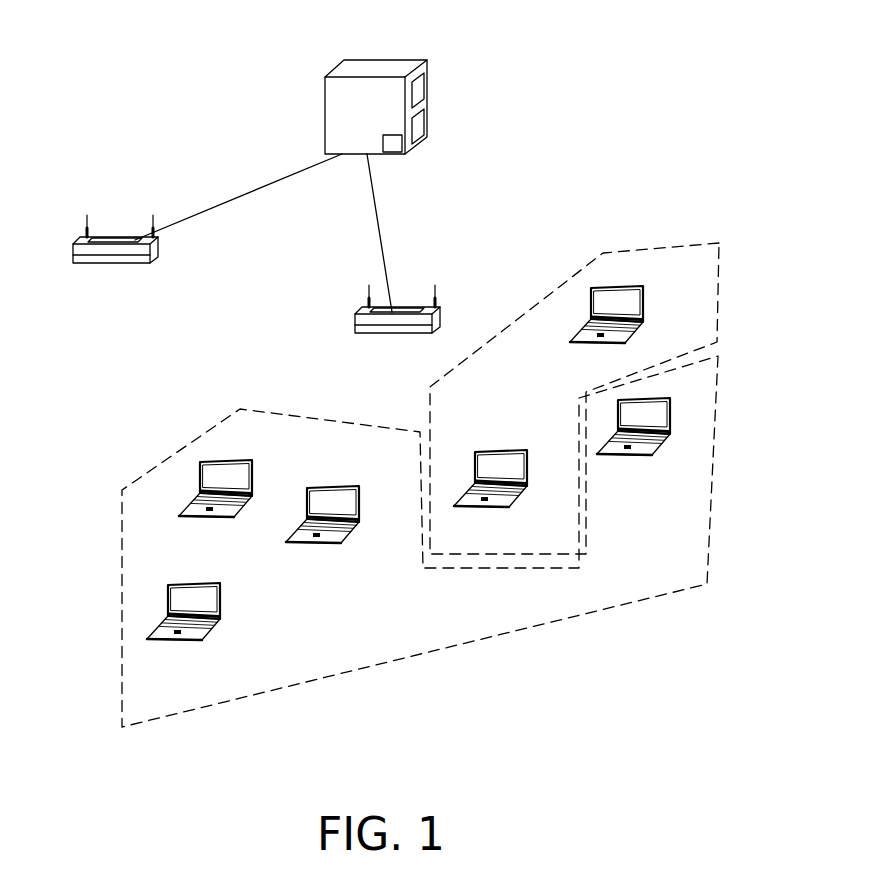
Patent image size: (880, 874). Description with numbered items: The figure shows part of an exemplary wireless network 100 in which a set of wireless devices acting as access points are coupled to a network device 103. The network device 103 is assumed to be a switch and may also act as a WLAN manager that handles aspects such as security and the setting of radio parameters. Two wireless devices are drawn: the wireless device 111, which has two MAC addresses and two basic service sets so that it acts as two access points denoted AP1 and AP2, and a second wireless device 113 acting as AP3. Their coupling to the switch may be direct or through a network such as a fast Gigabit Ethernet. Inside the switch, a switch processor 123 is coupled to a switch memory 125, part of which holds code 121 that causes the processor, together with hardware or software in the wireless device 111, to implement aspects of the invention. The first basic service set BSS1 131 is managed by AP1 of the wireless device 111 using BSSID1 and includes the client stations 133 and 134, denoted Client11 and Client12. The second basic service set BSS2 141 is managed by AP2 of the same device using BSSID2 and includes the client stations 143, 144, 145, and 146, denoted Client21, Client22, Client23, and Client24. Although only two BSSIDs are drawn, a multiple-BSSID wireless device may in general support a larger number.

The wireless network 100 is at (118, 778).
The network device 103 is at (372, 106).
The wireless device 111 is at (392, 335).
The wireless device 113 is at (132, 264).
The code 121 is at (392, 143).
The switch processor 123 is at (417, 92).
The switch memory 125 is at (419, 118).
The BSS1 131 is at (518, 366).
The client station 133 is at (515, 450).
The client station 134 is at (632, 286).
The BSS2 141 is at (373, 655).
The client station 143 is at (660, 398).
The client station 144 is at (242, 461).
The client station 145 is at (347, 488).
The client station 146 is at (210, 585).